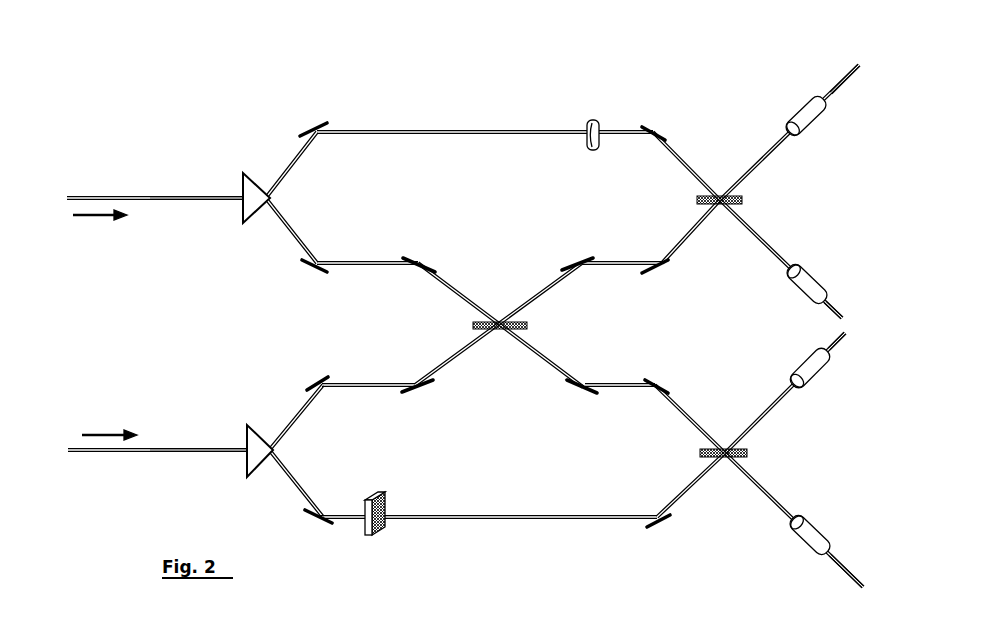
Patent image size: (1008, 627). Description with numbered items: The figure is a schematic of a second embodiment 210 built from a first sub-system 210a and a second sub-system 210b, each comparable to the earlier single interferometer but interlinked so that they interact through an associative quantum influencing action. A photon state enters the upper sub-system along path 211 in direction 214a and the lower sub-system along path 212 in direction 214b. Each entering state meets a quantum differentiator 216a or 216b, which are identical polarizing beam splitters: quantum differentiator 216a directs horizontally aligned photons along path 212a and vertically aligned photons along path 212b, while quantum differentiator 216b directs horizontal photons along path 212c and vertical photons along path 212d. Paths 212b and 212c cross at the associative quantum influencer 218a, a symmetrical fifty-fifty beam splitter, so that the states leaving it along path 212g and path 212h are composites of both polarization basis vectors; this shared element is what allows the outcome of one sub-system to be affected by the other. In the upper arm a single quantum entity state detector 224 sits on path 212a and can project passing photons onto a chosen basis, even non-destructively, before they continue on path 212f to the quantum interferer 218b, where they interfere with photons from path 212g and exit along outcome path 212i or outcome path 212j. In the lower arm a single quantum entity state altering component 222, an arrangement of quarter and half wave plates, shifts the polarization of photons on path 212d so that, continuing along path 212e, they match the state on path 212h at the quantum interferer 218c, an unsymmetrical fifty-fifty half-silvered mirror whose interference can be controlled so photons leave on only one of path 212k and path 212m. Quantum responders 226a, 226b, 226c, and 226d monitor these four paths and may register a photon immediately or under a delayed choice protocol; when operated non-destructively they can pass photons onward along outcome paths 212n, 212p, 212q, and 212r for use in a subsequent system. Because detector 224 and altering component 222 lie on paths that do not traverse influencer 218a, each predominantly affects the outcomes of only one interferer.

The second embodiment 210 is at (206, 61).
The first sub-system 210a is at (246, 131).
The second sub-system 210b is at (268, 371).
The path 211 is at (190, 199).
The path 212 is at (185, 448).
The path 212a is at (363, 130).
The path 212b is at (350, 260).
The path 212c is at (343, 387).
The path 212d is at (350, 515).
The optical path 212e is at (547, 515).
The path 212f is at (618, 131).
The path 212g is at (560, 250).
The path 212h is at (605, 383).
The outcome path 212i is at (763, 162).
The outcome path 212j is at (755, 232).
The path 212k is at (768, 415).
The path 212m is at (763, 489).
The outcome path 212n is at (847, 85).
The outcome path 212p is at (835, 306).
The outcome path 212q is at (837, 351).
The outcome path 212r is at (858, 568).
The direction 214a is at (97, 222).
The direction 214b is at (105, 432).
The quantum differentiator 216a is at (268, 188).
The quantum differentiator 216b is at (247, 463).
The associative quantum influencer 218a is at (472, 326).
The quantum interferer 218b is at (697, 203).
The quantum interferer 218c is at (700, 453).
The quantum entity state altering component 222 is at (387, 507).
The quantum entity state detector 224 is at (584, 122).
The quantum responder 226a is at (793, 115).
The quantum responder 226b is at (800, 293).
The quantum responder 226c is at (797, 370).
The quantum responder 226d is at (797, 533).